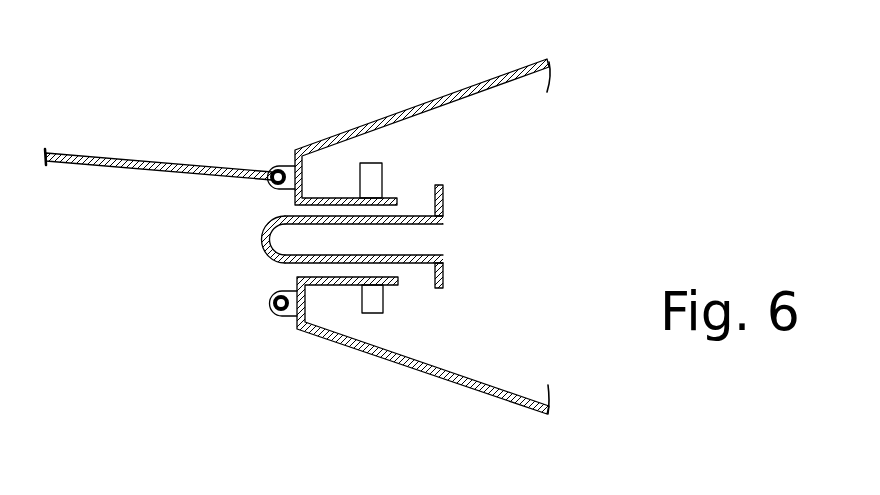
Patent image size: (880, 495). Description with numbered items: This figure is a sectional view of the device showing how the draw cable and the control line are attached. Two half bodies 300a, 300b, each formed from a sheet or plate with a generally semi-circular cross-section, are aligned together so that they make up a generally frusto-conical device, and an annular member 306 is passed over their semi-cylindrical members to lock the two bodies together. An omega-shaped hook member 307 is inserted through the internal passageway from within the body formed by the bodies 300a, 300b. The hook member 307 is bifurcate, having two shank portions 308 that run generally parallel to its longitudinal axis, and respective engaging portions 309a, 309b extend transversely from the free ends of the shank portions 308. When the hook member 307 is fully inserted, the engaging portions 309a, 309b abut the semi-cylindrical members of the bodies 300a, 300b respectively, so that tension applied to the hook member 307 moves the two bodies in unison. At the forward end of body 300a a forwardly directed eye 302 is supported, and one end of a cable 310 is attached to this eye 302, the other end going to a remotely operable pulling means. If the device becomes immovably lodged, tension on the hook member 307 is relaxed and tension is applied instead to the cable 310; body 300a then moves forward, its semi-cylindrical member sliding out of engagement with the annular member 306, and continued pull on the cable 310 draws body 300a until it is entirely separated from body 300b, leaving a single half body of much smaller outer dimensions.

The body 300a is at (425, 108).
The body 300b is at (395, 363).
The eye 302 is at (268, 172).
The annular member 306 is at (370, 175).
The omega-shaped hook member 307 is at (260, 238).
The shank portions 308 is at (353, 245).
The engaging portion 309a is at (443, 205).
The engaging portion 309b is at (443, 284).
The cable 310 is at (90, 157).